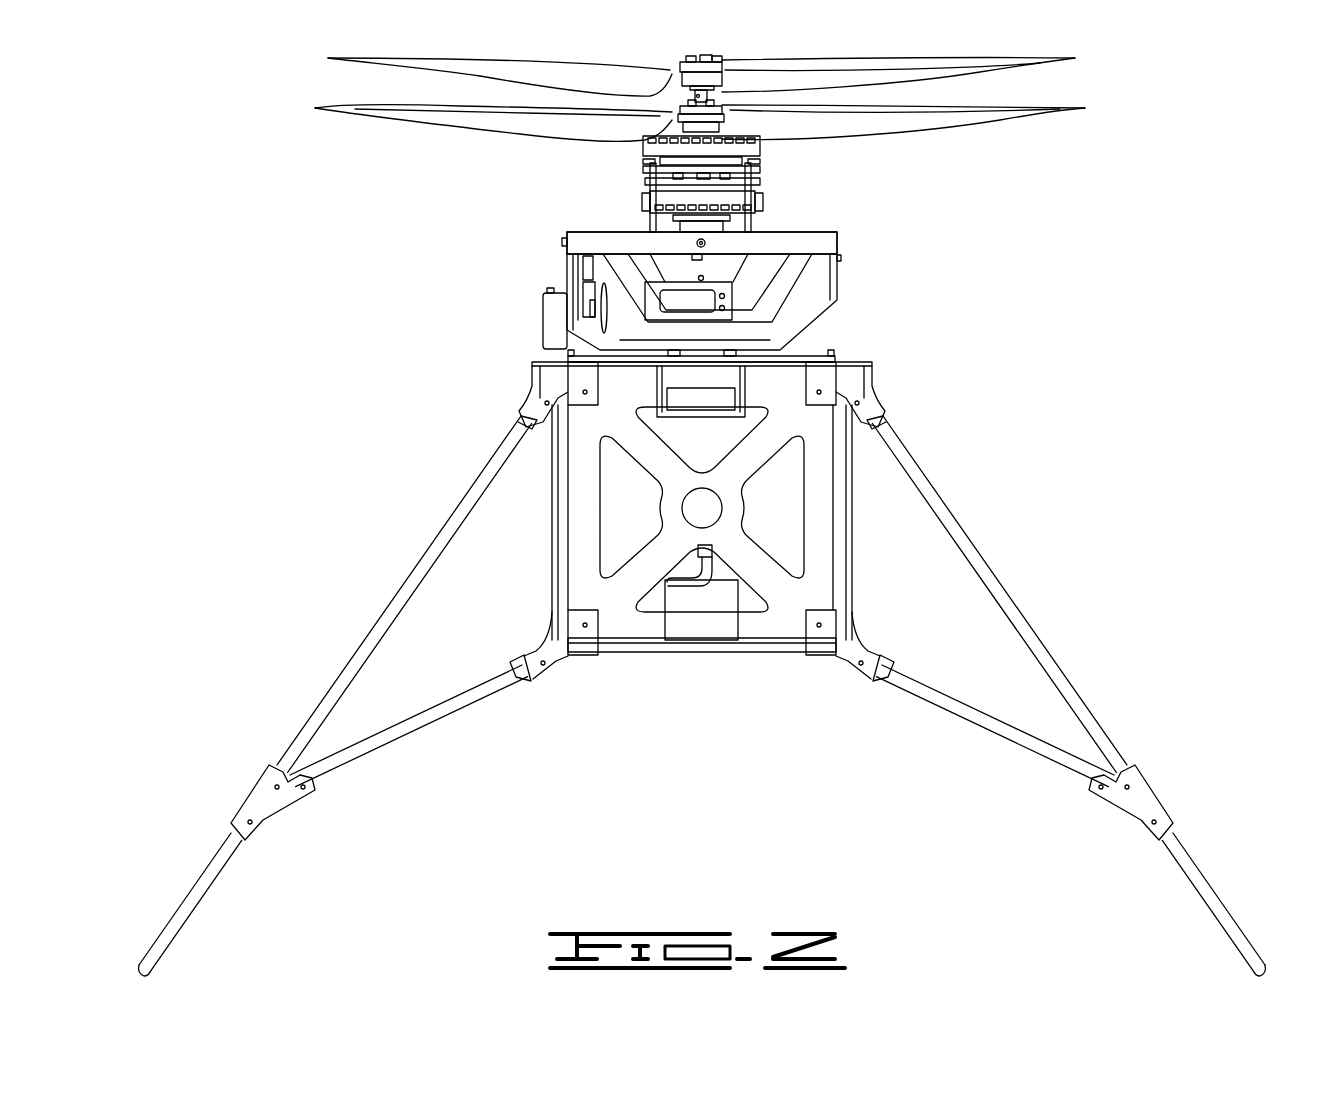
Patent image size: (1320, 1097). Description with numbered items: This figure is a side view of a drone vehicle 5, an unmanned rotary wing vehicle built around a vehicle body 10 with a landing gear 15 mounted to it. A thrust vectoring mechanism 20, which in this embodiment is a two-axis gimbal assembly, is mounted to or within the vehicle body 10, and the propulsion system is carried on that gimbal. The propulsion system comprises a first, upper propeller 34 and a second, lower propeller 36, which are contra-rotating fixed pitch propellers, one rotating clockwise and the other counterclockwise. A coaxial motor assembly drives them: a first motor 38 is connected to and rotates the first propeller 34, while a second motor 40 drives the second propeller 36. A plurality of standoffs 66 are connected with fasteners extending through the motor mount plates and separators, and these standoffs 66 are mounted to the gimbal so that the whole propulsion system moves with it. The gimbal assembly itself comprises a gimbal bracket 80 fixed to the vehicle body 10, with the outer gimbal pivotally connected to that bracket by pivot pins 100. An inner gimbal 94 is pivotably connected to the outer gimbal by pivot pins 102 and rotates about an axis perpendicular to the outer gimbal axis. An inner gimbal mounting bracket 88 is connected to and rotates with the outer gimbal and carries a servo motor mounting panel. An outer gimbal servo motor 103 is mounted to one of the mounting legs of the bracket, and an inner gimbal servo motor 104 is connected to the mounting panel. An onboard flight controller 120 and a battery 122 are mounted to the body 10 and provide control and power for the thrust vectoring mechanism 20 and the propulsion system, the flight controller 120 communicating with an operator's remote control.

The drone vehicle 5 is at (1040, 270).
The vehicle body 10 is at (730, 660).
The landing gear 15 is at (1045, 632).
The thrust vectoring mechanism 20 is at (852, 287).
The first propeller 34 is at (392, 65).
The second propeller 36 is at (1030, 108).
The first motor 38 is at (641, 197).
The second motor 40 is at (762, 147).
The standoffs 66 is at (760, 198).
The gimbal bracket 80 is at (567, 275).
The inner gimbal mounting bracket 88 is at (778, 315).
The inner gimbal 94 is at (830, 222).
The pivot pins 100 is at (565, 238).
The pivot pins 102 is at (698, 243).
The outer gimbal servo motor 103 is at (543, 318).
The inner gimbal servo motor 104 is at (683, 305).
The flight controller 120 is at (712, 403).
The battery 122 is at (683, 625).